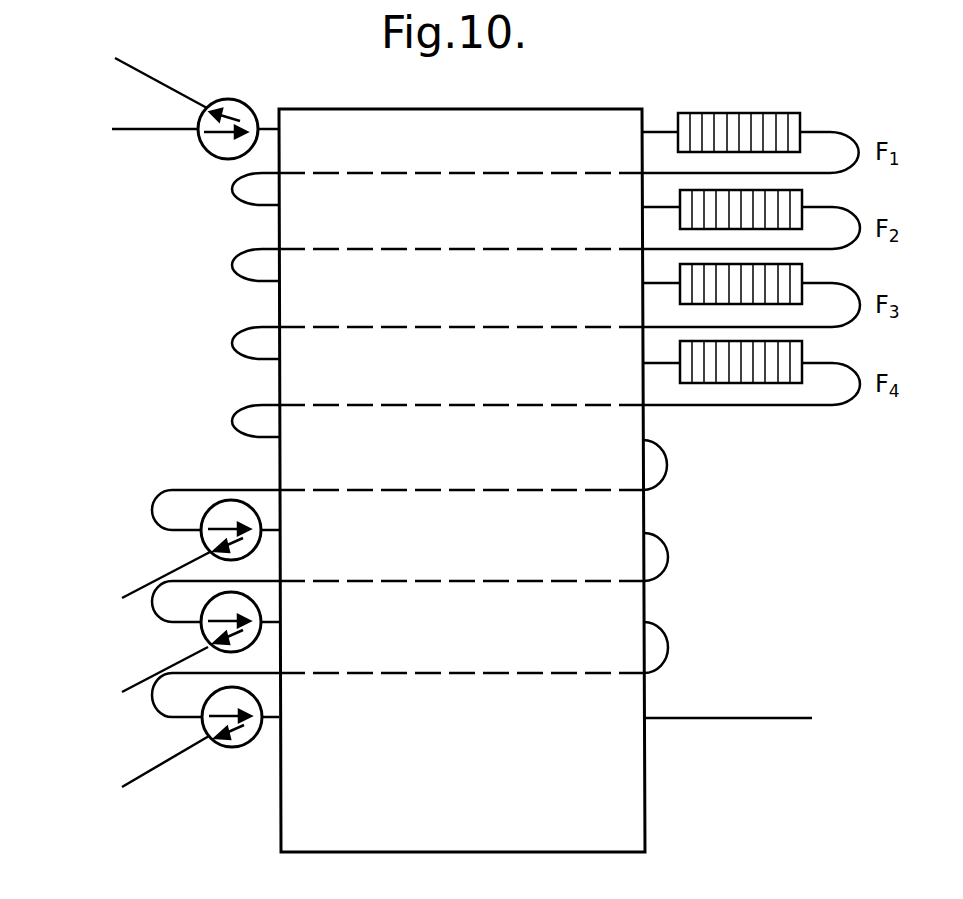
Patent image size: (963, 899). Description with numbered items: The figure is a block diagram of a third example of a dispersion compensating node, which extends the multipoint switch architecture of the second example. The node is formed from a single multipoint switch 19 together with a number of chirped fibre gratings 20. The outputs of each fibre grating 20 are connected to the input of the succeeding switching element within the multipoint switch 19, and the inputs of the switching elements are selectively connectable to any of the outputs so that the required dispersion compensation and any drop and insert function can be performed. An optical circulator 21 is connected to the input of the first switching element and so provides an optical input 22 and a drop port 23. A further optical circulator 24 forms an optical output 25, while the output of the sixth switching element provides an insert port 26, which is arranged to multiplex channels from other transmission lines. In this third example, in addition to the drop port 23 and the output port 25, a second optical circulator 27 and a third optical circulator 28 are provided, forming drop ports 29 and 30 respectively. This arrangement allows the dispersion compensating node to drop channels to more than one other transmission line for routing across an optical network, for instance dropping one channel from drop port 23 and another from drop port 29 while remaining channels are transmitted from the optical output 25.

The multipoint switch 19 is at (648, 778).
The chirped fibre grating 20 is at (770, 113).
The optical circulator 21 is at (223, 159).
The optical input 22 is at (180, 131).
The drop port 23 is at (158, 81).
The optical circulator 24 is at (228, 747).
The optical output 25 is at (180, 758).
The insert port 26 is at (745, 718).
The second optical circulator 27 is at (215, 506).
The third optical circulator 28 is at (257, 606).
The drop port 29 is at (186, 565).
The drop port 30 is at (186, 657).